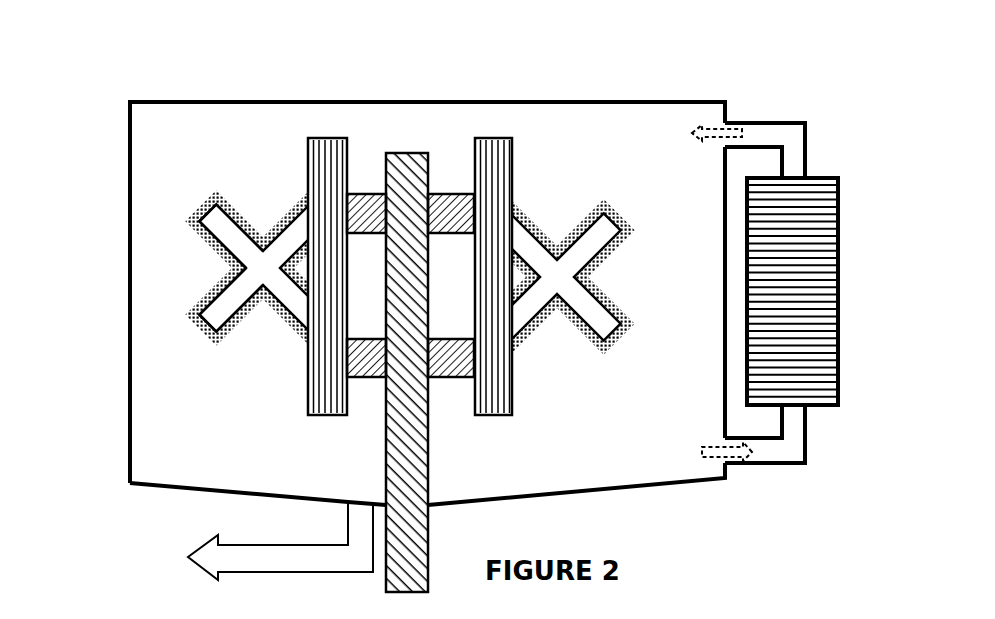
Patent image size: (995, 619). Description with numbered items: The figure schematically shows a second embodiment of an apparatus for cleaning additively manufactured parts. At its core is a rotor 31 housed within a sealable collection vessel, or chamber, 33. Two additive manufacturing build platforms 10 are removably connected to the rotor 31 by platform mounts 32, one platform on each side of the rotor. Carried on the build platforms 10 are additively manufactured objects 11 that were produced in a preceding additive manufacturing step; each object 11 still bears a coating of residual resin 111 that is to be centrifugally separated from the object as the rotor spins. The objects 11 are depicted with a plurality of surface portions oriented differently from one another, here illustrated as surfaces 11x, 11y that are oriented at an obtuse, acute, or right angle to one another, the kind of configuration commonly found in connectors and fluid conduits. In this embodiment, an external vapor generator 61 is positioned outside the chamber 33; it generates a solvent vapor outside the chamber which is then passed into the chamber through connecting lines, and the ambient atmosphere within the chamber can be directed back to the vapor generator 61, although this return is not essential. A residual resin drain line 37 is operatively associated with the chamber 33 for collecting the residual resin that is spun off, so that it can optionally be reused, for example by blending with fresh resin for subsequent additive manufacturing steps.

The sealable collection vessel 33 is at (128, 165).
The coating of residual resin 111 is at (217, 188).
The additively manufactured objects 11 is at (217, 308).
The surface portion 11x is at (212, 292).
The surface portion 11y is at (218, 243).
The additive manufacturing build platform 10 is at (410, 276).
The platform mounts 32 is at (455, 213).
The rotor 31 is at (398, 428).
The external vapor generator 61 is at (815, 215).
The residual resin drain line 37 is at (265, 556).